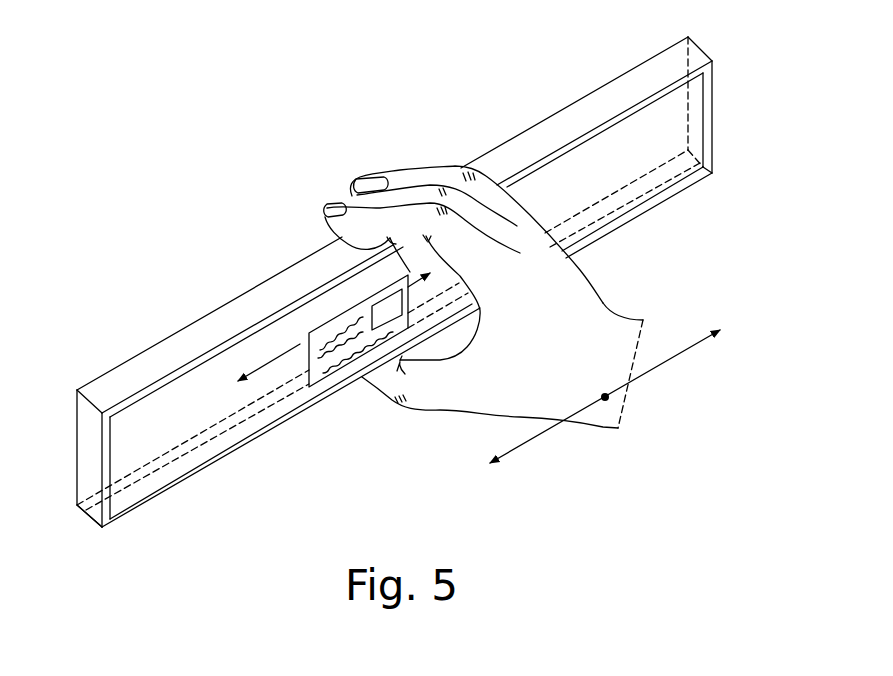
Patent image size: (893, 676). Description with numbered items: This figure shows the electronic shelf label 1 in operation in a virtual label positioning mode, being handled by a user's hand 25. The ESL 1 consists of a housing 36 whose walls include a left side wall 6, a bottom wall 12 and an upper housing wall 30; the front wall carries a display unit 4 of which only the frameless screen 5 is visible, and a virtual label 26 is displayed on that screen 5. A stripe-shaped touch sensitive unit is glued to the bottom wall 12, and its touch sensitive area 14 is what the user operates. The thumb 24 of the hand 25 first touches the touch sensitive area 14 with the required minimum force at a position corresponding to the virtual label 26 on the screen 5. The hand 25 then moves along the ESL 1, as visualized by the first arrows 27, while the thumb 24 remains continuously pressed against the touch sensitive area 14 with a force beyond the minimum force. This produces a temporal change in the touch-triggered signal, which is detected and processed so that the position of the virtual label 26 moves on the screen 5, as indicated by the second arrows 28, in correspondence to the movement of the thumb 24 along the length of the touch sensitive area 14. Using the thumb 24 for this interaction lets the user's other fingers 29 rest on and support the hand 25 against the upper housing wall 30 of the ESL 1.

The electronic shelf label 1 is at (715, 59).
The display unit 4 is at (175, 368).
The screen 5 is at (143, 423).
The left side wall 6 is at (88, 441).
The bottom wall 12 is at (93, 515).
The touch sensitive area 14 is at (157, 478).
The thumb 24 is at (382, 384).
The hand 25 is at (603, 322).
The virtual label 26 is at (340, 313).
The first arrows 27 is at (683, 357).
The second arrows 28 is at (418, 273).
The fingers 29 is at (373, 243).
The upper housing wall 30 is at (581, 117).
The housing 36 is at (712, 174).